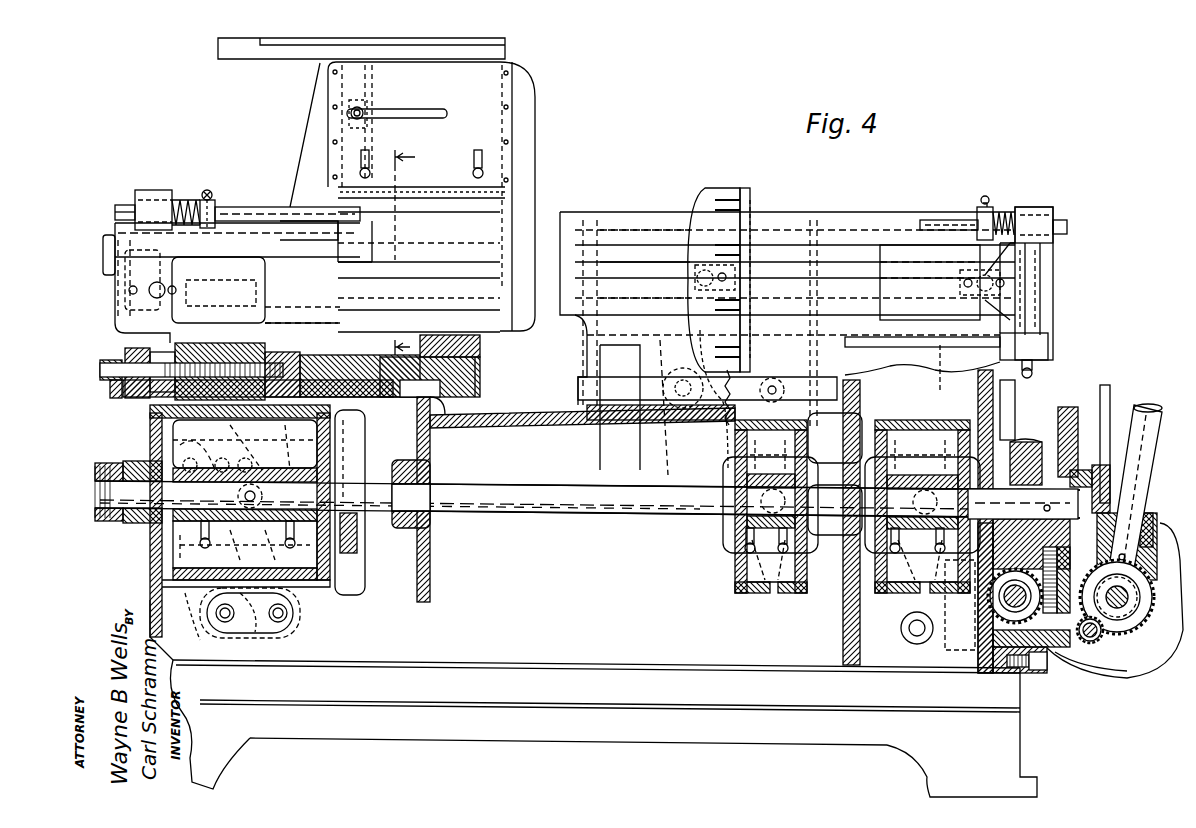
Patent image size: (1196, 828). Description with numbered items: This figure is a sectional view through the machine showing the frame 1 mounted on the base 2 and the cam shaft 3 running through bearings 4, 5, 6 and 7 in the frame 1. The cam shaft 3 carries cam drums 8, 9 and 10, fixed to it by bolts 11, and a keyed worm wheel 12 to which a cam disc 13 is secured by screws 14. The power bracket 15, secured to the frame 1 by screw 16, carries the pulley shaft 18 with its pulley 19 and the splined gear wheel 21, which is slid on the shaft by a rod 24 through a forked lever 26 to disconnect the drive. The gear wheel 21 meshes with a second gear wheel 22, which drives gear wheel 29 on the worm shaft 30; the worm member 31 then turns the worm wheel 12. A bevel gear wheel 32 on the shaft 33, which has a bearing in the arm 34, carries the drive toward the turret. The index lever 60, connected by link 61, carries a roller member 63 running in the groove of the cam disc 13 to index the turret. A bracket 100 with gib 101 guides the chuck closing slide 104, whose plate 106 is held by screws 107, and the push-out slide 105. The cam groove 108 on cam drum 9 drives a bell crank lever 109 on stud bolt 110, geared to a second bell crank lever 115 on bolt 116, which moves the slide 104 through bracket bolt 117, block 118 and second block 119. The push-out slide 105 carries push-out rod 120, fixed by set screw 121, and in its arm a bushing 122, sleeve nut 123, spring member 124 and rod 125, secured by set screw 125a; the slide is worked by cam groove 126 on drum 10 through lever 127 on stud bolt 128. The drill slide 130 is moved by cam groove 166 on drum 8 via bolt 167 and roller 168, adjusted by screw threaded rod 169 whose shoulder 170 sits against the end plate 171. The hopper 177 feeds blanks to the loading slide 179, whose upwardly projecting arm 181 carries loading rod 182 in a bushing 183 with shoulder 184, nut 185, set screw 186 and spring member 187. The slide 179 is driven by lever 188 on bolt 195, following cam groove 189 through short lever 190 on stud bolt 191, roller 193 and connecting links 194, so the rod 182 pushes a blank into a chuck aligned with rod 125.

The frame 1 is at (150, 568).
The base 2 is at (1010, 740).
The cam shaft 3 is at (645, 470).
The bearing 4 is at (140, 525).
The bearing 5 is at (396, 463).
The bearing 6 is at (812, 450).
The bearing 7 is at (993, 445).
The cam drum 8 is at (330, 550).
The cam drum 9 is at (735, 582).
The cam drum 10 is at (875, 590).
The bolts 11 is at (780, 550).
The worm wheel 12 is at (1025, 442).
The cam disc 13 is at (1068, 407).
The screws 14 is at (1040, 503).
The power bracket 15 is at (1025, 670).
The screw 16 is at (1047, 668).
The pulley shaft 18 is at (1130, 590).
The pulley 19 is at (1128, 680).
The gear wheel 21 is at (1130, 598).
The second gear wheel 22 is at (1100, 520).
The rod 24 is at (1094, 640).
The forked lever 26 is at (1104, 631).
The gear wheel 29 is at (990, 590).
The worm shaft 30 is at (988, 612).
The worm member 31 is at (993, 640).
The bevel gear wheel 32 is at (1140, 552).
The shaft 33 is at (1152, 460).
The arm 34 is at (1153, 520).
The index lever 60 is at (1105, 465).
The link 61 is at (1108, 388).
The roller member 63 is at (1083, 470).
The bracket 100 is at (580, 365).
The gib 101 is at (640, 212).
The chuck closing slide 104 is at (710, 190).
The push-out slide 105 is at (1053, 262).
The plate 106 is at (746, 188).
The screws 107 is at (752, 205).
The cam groove 108 is at (765, 593).
The bell crank lever 109 is at (765, 385).
The stud bolt 110 is at (745, 368).
The second bell crank lever 115 is at (660, 348).
The bolt 116 is at (668, 382).
The bracket bolt 117 is at (685, 300).
The block 118 is at (695, 268).
The second block 119 is at (690, 278).
The push-out rod 120 is at (866, 347).
The set screw 121 is at (1033, 372).
The bushing 122 is at (1040, 205).
The sleeve nut 123 is at (1000, 208).
The spring member 124 is at (1022, 200).
The rod 125 is at (928, 220).
The set screw 125a is at (985, 196).
The cam groove 126 is at (898, 596).
The lever 127 is at (947, 358).
The stud bolt 128 is at (912, 636).
The drill slide 130 is at (480, 353).
The cam groove 166 is at (200, 594).
The bolt 167 is at (240, 358).
The roller 168 is at (222, 428).
The screw threaded rod 169 is at (110, 372).
The shoulder 170 is at (120, 360).
The end plate 171 is at (125, 398).
The hopper 177 is at (512, 72).
The loading slide 179 is at (265, 295).
The upwardly projecting arm 181 is at (152, 190).
The loading rod 182 is at (270, 207).
The bushing 183 is at (182, 200).
The shoulder 184 is at (125, 205).
The nut 185 is at (215, 204).
The set screw 186 is at (209, 190).
The spring member 187 is at (206, 190).
The lever 188 is at (200, 615).
The cam groove 189 is at (290, 625).
The short lever 190 is at (290, 600).
The stud bolt 191 is at (277, 625).
The roller 193 is at (268, 496).
The connecting links 194 is at (238, 455).
The bolt 195 is at (223, 625).